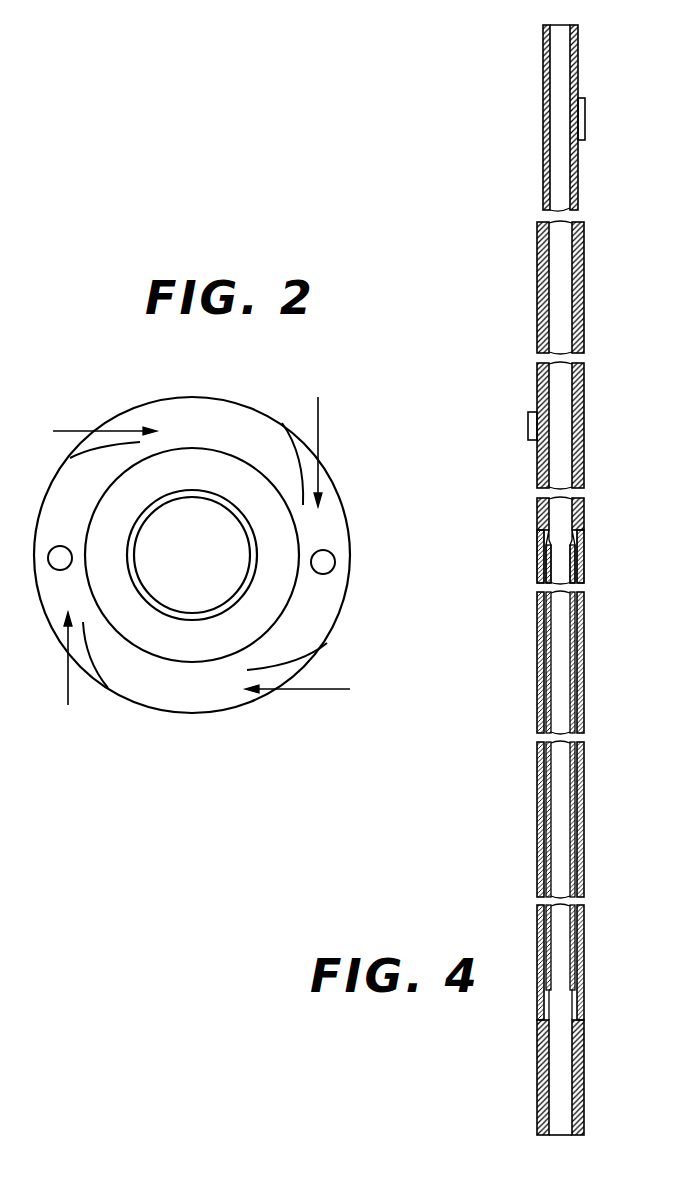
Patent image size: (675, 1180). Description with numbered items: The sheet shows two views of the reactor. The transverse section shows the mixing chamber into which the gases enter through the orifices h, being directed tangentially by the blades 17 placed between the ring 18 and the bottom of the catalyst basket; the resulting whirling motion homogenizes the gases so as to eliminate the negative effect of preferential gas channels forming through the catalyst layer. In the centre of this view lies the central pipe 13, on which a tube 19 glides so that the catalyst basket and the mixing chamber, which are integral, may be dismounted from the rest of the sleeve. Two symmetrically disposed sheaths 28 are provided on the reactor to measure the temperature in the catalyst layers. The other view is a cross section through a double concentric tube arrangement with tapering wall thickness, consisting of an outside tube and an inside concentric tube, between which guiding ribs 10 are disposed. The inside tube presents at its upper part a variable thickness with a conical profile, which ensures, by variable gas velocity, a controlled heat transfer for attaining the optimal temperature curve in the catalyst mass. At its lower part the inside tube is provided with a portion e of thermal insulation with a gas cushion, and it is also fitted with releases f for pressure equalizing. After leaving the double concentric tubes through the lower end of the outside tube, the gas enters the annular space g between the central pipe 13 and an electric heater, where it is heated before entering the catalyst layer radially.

In FIG. 2, the central pipe 13 is at (133, 577).
In FIG. 2, the tube 19 is at (225, 605).
In FIG. 2, the blades 17 is at (303, 478).
In FIG. 2, the ring 18 is at (323, 583).
In FIG. 2, the sheaths 28 is at (338, 561).
In FIG. 2, the orifices h is at (300, 450).
In FIG. 4, the guiding ribs 10 is at (582, 112).
In FIG. 4, the annular space g is at (585, 410).
In FIG. 4, the releases f is at (537, 620).
In FIG. 4, the portion of thermal insulation e is at (580, 660).